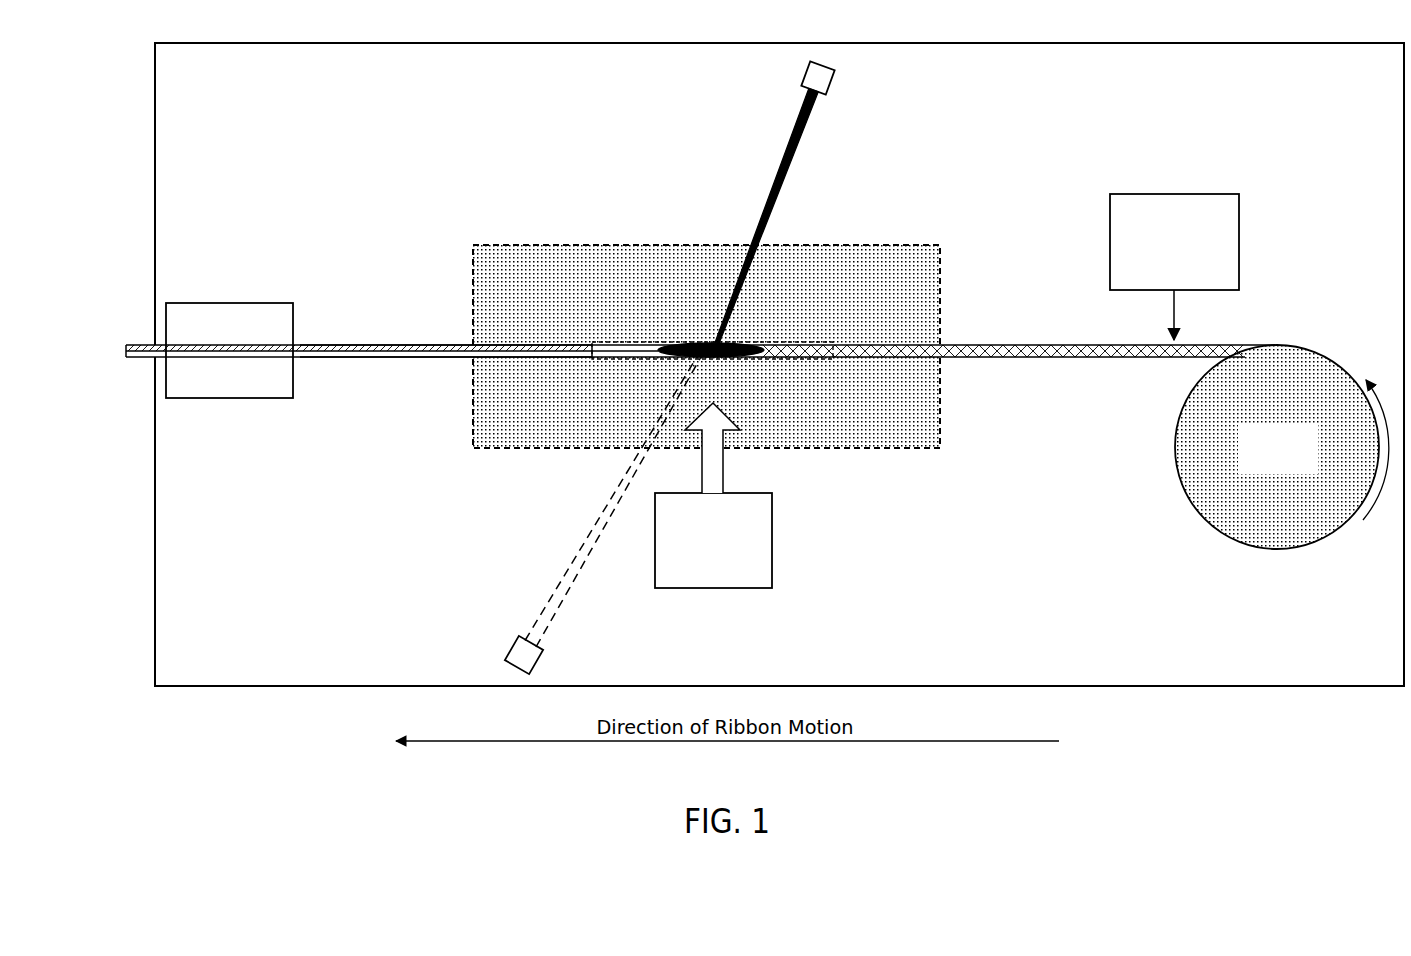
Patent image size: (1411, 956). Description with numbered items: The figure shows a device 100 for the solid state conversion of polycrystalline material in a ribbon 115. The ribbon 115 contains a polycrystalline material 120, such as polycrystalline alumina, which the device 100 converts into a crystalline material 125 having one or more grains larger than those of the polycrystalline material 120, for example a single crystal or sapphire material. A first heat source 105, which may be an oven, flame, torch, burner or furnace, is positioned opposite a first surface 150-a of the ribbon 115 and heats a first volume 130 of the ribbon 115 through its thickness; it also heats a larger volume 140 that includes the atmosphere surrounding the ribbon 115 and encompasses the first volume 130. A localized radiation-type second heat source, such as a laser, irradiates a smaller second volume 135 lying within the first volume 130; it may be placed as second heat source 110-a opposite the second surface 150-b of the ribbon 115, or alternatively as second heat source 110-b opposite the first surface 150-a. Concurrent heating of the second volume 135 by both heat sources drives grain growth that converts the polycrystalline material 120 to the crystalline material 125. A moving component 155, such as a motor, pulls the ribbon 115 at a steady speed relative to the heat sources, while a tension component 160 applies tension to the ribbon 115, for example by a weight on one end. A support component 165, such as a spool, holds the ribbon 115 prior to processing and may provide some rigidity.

The device 100 is at (1130, 783).
The first heat source 105 is at (730, 578).
The second heat source 110-a is at (833, 80).
The second heat source 110-b is at (513, 647).
The ribbon 115 is at (127, 351).
The polycrystalline material 120 is at (997, 347).
The crystalline material 125 is at (425, 350).
The first volume 130 is at (785, 358).
The second volume 135 is at (698, 343).
The volume 140 is at (875, 245).
The first surface 150-a is at (572, 358).
The second surface 150-b is at (572, 345).
The moving component 155 is at (232, 303).
The tension component 160 is at (1158, 281).
The support component 165 is at (1262, 470).